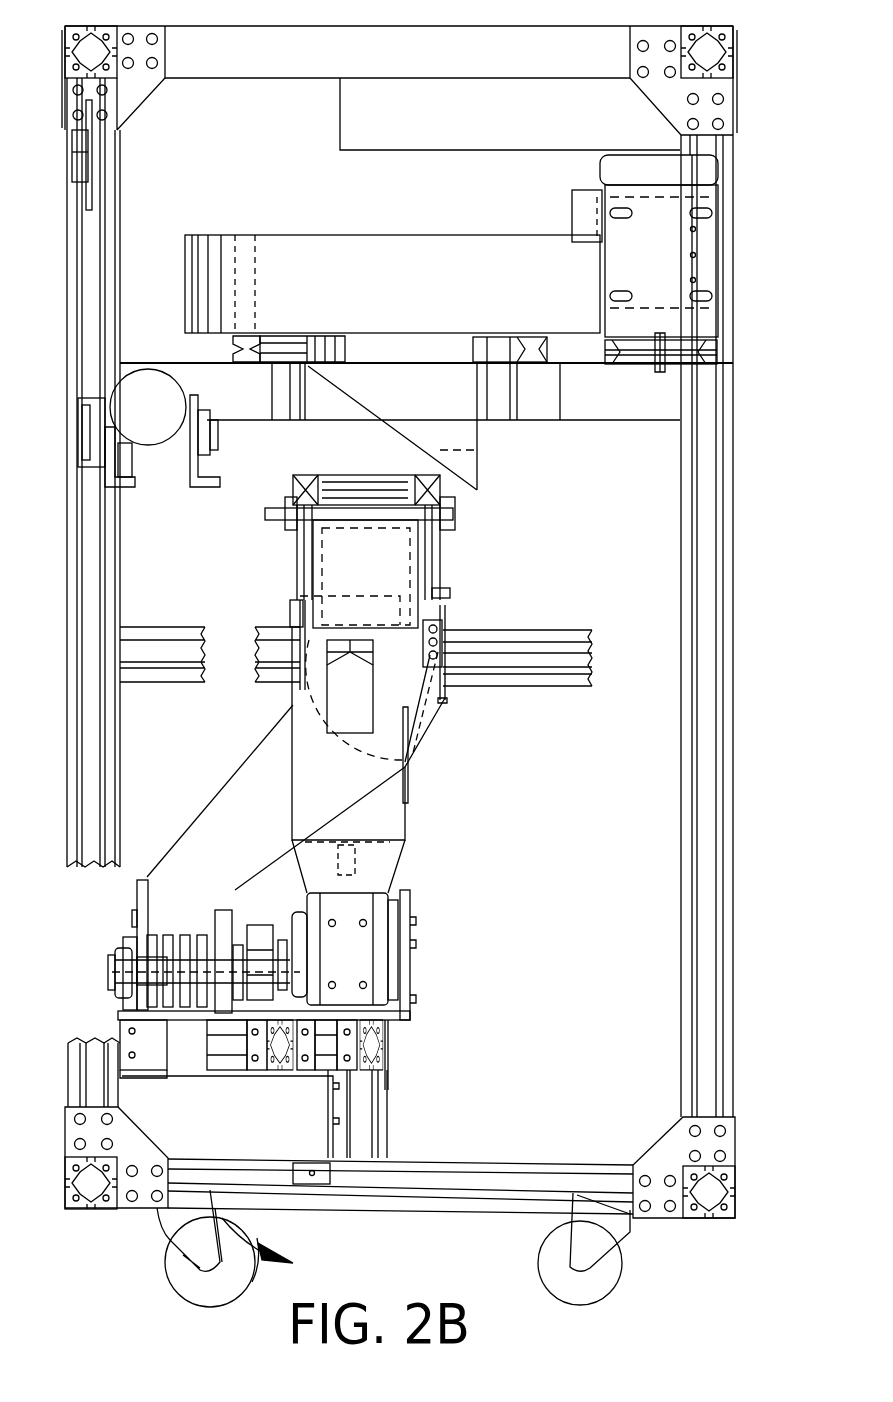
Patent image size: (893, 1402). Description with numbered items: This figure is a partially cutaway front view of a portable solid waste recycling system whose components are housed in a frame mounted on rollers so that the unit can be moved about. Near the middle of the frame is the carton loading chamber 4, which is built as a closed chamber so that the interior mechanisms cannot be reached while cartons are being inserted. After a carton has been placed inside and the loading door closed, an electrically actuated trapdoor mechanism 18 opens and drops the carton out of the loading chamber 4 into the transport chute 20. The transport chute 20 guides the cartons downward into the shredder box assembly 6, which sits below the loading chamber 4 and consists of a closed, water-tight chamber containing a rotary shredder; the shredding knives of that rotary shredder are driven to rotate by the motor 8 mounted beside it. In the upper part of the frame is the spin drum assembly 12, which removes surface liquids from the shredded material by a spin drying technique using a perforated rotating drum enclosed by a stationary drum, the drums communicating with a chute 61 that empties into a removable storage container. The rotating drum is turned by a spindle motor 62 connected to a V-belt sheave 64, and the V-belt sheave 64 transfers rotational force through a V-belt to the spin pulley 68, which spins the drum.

The carton loading chamber 4 is at (400, 548).
The shredder box assembly 6 is at (108, 945).
The motor 8 is at (378, 818).
The spin drum assembly 12 is at (288, 226).
The trapdoor mechanism 18 is at (410, 710).
The transport chute 20 is at (233, 810).
The chute 61 is at (465, 437).
The spindle motor 62 is at (697, 243).
The V-belt sheave 64 is at (713, 359).
The spin pulley 68 is at (232, 338).